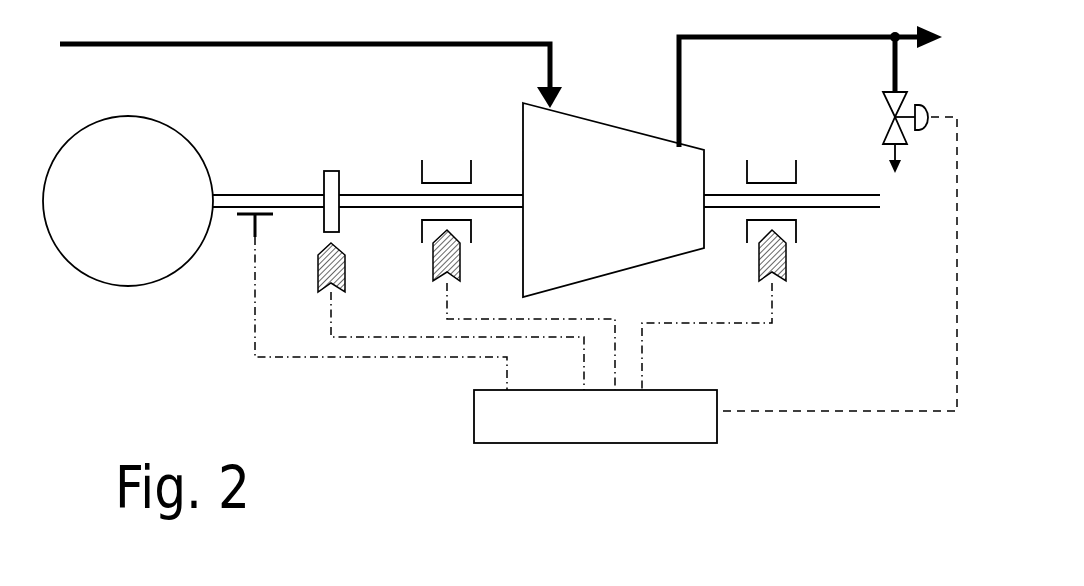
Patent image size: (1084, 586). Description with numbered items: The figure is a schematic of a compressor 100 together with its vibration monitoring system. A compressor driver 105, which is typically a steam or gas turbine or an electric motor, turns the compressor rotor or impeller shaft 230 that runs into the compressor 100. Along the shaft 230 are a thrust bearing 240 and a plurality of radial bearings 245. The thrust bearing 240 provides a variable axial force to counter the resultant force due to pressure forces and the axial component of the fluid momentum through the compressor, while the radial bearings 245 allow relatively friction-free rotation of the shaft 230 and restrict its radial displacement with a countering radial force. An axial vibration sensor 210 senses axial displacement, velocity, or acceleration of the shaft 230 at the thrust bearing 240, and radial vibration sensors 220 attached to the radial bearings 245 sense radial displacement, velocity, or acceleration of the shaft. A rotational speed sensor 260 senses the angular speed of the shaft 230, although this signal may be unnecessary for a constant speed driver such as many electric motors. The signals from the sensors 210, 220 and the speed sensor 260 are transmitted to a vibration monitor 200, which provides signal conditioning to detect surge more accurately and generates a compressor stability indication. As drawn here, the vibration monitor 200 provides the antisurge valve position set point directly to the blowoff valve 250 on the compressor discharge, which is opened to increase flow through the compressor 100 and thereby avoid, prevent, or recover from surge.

The compressor 100 is at (625, 186).
The compressor driver 105 is at (145, 247).
The vibration monitor 200 is at (638, 432).
The axial vibration sensor 210 is at (328, 276).
The radial vibration sensor 220 is at (445, 262).
The compressor rotor shaft 230 is at (230, 194).
The thrust bearing 240 is at (331, 180).
The radial bearing 245 is at (447, 178).
The blowoff valve 250 is at (890, 107).
The rotational speed sensor 260 is at (253, 226).